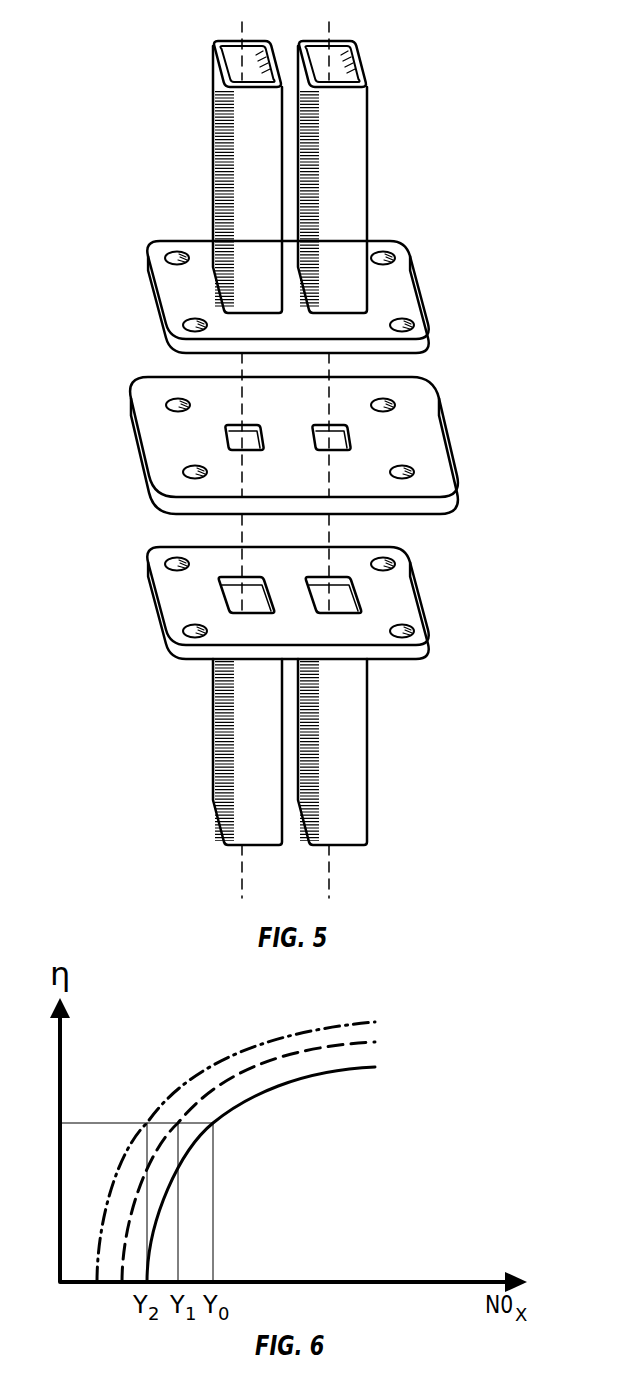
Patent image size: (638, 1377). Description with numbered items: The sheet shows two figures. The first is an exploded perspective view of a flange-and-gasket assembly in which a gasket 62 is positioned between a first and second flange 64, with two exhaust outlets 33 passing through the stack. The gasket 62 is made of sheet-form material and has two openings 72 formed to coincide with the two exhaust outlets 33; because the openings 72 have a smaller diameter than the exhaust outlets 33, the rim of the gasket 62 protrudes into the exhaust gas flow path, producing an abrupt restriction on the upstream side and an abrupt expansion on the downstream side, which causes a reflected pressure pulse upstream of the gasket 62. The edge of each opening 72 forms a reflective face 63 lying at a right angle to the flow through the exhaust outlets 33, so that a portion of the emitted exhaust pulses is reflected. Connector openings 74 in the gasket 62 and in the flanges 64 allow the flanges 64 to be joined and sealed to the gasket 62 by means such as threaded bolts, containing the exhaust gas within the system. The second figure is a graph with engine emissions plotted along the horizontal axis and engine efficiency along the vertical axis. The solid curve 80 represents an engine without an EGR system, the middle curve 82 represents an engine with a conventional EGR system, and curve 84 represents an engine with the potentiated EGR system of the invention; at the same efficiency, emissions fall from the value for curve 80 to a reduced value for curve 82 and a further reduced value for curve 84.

In FIG. 5, the exhaust outlets 33 is at (352, 188).
In FIG. 5, the gasket 62 is at (318, 445).
In FIG. 5, the reflective face 63 is at (286, 418).
In FIG. 5, the flanges 64 is at (400, 287).
In FIG. 5, the openings 72 is at (235, 440).
In FIG. 5, the connector openings 74 is at (164, 245).
In FIG. 6, the solid curve 80 is at (252, 1097).
In FIG. 6, the middle curve 82 is at (280, 1056).
In FIG. 6, the curve 84 is at (247, 1045).